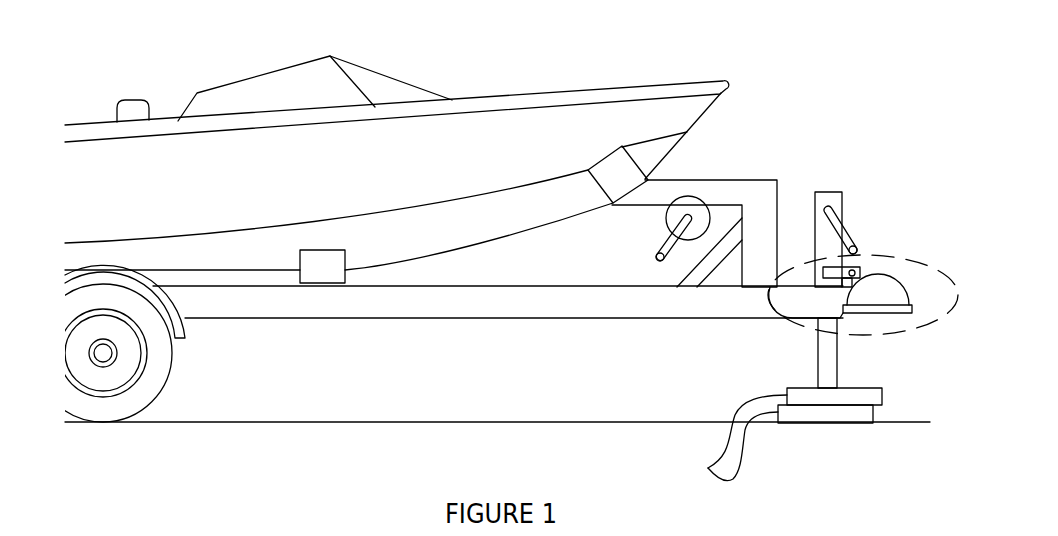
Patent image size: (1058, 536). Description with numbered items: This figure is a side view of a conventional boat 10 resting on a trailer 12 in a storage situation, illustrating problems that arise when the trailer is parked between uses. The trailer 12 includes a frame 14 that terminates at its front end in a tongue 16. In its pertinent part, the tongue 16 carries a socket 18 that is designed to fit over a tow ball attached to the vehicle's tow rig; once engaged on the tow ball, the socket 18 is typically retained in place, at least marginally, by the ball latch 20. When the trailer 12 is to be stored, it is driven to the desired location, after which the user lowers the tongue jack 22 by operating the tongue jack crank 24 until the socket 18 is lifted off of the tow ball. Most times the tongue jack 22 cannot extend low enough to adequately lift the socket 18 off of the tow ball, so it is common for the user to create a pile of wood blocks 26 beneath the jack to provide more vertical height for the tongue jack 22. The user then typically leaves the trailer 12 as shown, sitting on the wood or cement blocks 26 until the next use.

The boat 10 is at (483, 106).
The trailer 12 is at (270, 357).
The frame 14 is at (521, 307).
The tongue 16 is at (776, 306).
The socket 18 is at (900, 285).
The ball latch 20 is at (815, 210).
The tongue jack 22 is at (832, 357).
The tongue jack crank 24 is at (843, 212).
The wood blocks 26 is at (730, 438).